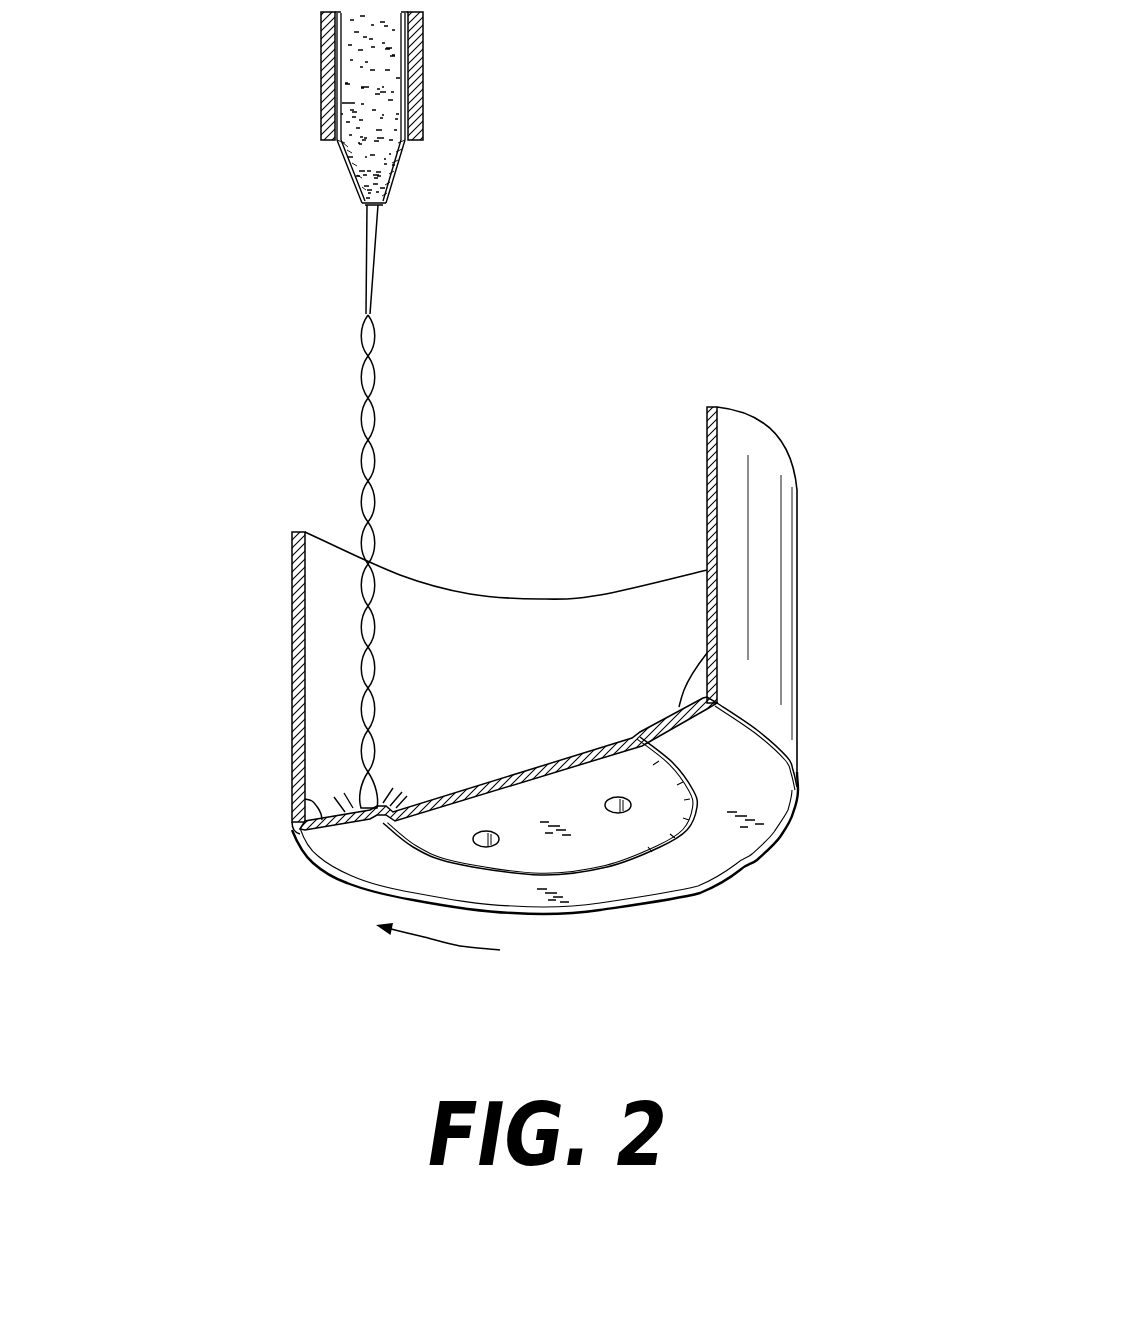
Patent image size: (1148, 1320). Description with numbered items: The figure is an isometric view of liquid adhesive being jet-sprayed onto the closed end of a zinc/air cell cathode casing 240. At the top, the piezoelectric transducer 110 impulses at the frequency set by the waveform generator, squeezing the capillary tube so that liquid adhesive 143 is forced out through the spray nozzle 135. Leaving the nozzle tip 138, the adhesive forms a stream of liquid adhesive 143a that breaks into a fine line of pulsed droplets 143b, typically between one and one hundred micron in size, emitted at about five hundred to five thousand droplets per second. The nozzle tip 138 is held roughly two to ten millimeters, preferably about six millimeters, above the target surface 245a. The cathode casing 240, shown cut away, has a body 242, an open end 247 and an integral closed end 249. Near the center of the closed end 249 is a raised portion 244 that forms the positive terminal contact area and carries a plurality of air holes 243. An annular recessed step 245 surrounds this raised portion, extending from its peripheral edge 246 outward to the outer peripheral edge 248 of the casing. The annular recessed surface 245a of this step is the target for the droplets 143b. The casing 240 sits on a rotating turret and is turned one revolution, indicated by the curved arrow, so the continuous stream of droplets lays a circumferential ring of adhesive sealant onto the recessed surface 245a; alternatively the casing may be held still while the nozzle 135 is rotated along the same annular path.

The piezoelectric transducer 110 is at (422, 60).
The spray nozzle 135 is at (402, 167).
The nozzle tip 138 is at (384, 207).
The liquid adhesive 143 is at (363, 140).
The stream of liquid adhesive 143a is at (366, 275).
The pulsed droplets 143b is at (360, 784).
The cathode casing 240 is at (292, 602).
The body 242 is at (770, 562).
The open end 247 is at (600, 610).
The annular target surface 245a is at (679, 707).
The outer peripheral edge 248 is at (785, 750).
The annular recessed step 245 is at (312, 848).
The peripheral edge of raised terminal portion 246 is at (690, 807).
The raised portion 244 is at (582, 847).
The air holes 243 is at (490, 858).
The closed end 249 is at (363, 850).